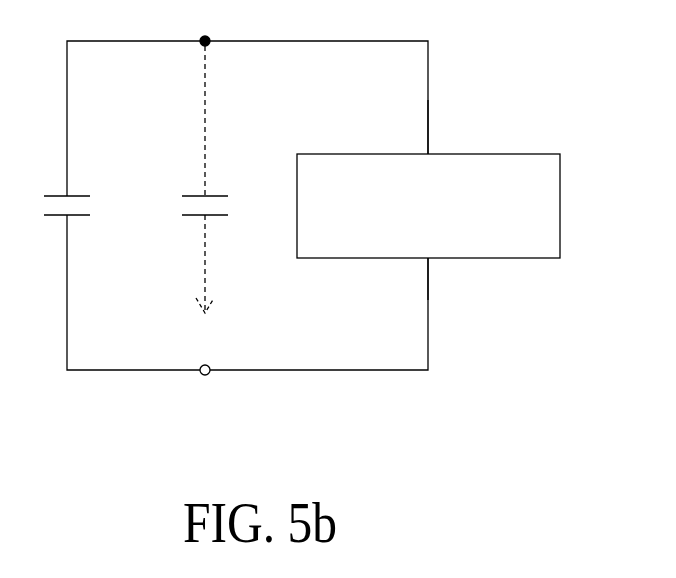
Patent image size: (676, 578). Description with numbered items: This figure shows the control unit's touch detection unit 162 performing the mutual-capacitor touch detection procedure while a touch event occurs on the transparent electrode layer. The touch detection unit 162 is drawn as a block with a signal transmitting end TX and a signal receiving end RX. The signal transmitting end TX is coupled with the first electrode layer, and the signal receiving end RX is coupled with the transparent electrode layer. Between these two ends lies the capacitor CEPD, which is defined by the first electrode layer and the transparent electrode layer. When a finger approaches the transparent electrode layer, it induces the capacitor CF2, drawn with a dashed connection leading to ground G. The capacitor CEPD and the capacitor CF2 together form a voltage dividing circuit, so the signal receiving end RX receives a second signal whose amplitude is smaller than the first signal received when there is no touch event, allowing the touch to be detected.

The touch detection unit 162 is at (488, 154).
The capacitor C_EPD CEPD is at (98, 206).
The capacitor C_F2 CF2 is at (229, 179).
The ground G is at (205, 350).
The signal receiving end RX is at (452, 127).
The signal transmitting end TX is at (451, 279).